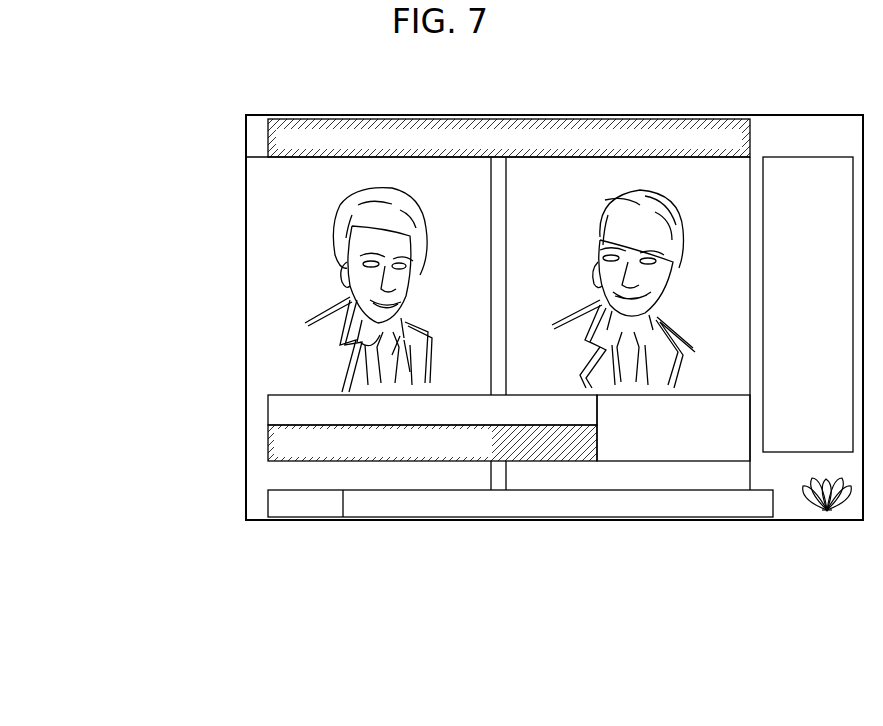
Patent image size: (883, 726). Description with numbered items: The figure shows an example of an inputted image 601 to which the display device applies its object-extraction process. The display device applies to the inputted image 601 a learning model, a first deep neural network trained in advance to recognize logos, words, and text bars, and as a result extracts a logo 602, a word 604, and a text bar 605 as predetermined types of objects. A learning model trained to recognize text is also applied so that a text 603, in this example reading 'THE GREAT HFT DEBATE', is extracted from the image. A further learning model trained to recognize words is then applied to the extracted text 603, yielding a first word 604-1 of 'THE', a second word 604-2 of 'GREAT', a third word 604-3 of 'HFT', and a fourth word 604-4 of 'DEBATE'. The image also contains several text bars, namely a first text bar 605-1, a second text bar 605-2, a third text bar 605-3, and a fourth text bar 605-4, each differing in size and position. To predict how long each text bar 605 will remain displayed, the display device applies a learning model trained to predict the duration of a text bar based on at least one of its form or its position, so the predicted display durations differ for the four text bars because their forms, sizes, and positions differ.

The inputted image 601 is at (612, 522).
The logo 602 is at (827, 521).
The text 603 is at (377, 566).
The word 604 is at (377, 566).
The first word 604-1 is at (364, 527).
The second word 604-2 is at (392, 539).
The third word 604-3 is at (375, 553).
The fourth word 604-4 is at (297, 608).
The text bar 605 is at (392, 409).
The first text bar 605-1 is at (267, 139).
The second text bar 605-2 is at (267, 411).
The third text bar 605-3 is at (329, 562).
The fourth text bar 605-4 is at (267, 505).